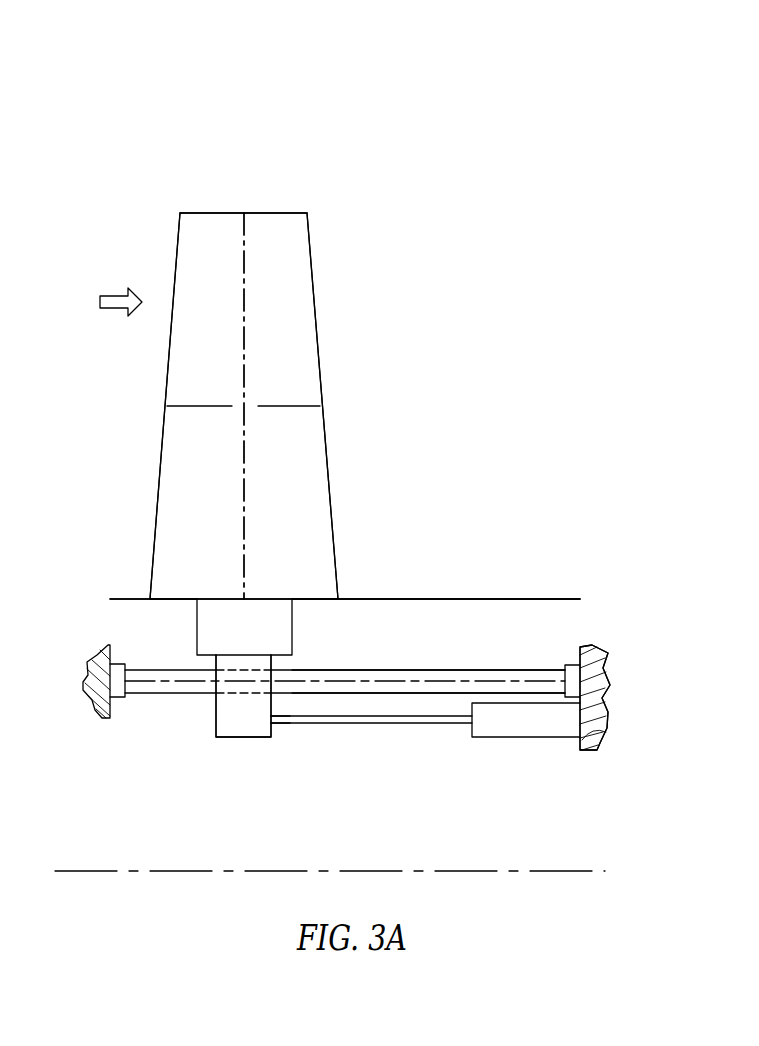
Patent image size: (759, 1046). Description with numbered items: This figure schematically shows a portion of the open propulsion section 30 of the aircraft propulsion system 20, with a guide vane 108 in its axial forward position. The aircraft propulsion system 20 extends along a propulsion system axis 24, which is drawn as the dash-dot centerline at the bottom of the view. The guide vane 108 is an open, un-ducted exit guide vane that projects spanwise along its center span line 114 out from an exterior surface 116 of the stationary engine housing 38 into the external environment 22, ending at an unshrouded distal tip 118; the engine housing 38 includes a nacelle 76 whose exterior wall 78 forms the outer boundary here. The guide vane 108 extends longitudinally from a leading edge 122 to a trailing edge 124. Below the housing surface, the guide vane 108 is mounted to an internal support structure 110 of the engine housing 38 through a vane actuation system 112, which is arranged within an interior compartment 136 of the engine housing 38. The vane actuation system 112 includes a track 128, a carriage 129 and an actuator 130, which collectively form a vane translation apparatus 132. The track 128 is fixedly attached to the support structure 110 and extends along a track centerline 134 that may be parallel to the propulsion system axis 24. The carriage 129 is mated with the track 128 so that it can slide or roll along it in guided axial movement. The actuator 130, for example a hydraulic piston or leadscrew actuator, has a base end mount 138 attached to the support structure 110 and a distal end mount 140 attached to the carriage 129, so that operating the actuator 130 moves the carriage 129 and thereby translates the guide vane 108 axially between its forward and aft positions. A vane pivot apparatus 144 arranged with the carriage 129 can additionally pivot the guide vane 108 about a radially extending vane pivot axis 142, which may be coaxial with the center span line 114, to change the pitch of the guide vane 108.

The aircraft propulsion system 20 is at (107, 125).
The open propulsion section 30 is at (356, 140).
The external environment 22 is at (123, 217).
The propulsion system axis 24 is at (62, 865).
The engine housing 38 is at (563, 587).
The nacelle 76 is at (515, 597).
The exterior wall 78 is at (515, 597).
The guide vane 108 is at (218, 539).
The support structure 110 is at (88, 672).
The vane actuation system 112 is at (223, 768).
The center span line 114 is at (246, 235).
The exterior surface 116 is at (120, 597).
The distal tip 118 is at (203, 213).
The leading edge 122 is at (176, 265).
The trailing edge 124 is at (313, 277).
The track 128 is at (172, 694).
The carriage 129 is at (256, 738).
The actuator 130 is at (435, 743).
The vane translation apparatus 132 is at (338, 752).
The track centerline 134 is at (425, 680).
The interior compartment 136 is at (487, 650).
The base end mount 138 is at (606, 730).
The distal end mount 140 is at (280, 727).
The vane pivot axis 142 is at (246, 235).
The vane pivot apparatus 144 is at (262, 640).